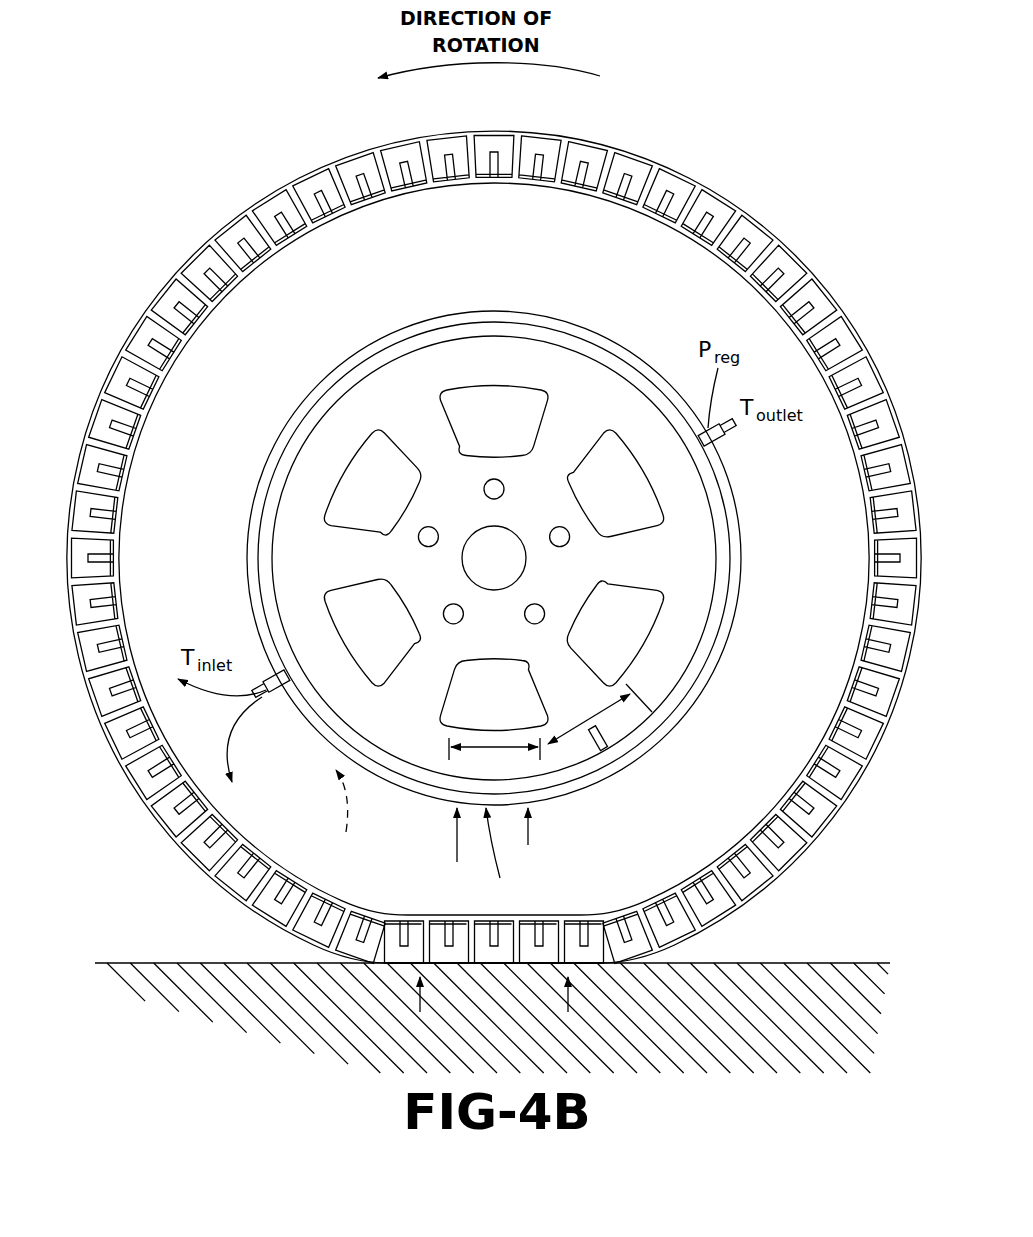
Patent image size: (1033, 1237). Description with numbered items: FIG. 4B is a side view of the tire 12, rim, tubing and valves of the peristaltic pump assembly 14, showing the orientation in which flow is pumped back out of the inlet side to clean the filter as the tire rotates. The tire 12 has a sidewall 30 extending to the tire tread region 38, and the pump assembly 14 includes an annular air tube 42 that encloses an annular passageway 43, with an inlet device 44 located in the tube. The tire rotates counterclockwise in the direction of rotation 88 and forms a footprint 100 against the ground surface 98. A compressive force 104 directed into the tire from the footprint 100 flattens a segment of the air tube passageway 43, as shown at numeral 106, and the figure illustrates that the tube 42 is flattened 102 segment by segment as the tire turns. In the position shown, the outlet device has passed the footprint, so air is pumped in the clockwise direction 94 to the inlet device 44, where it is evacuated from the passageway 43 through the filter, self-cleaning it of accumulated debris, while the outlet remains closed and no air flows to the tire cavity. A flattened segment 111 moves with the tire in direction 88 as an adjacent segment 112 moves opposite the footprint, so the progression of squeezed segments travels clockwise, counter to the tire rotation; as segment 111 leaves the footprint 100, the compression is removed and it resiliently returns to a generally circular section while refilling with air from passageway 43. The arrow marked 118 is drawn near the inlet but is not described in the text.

The tire 12 is at (150, 250).
The peristaltic pump assembly 14 is at (748, 598).
The sidewall 30 is at (610, 236).
The tire tread region 38 is at (708, 180).
The annular air tube 42 is at (534, 313).
The annular passageway 43 is at (306, 418).
The inlet device 44 is at (722, 440).
The direction of rotation 88 is at (574, 70).
The clockwise direction 94 is at (342, 818).
The ground surface 98 is at (784, 963).
The footprint 100 is at (504, 965).
The flattened 102 is at (501, 856).
The compressive force 104 is at (420, 1003).
The flattened segment of the passageway 106 is at (592, 816).
The flattened segment 111 is at (582, 728).
The adjacent segment 112 is at (494, 746).
The air flow direction 118 is at (206, 698).